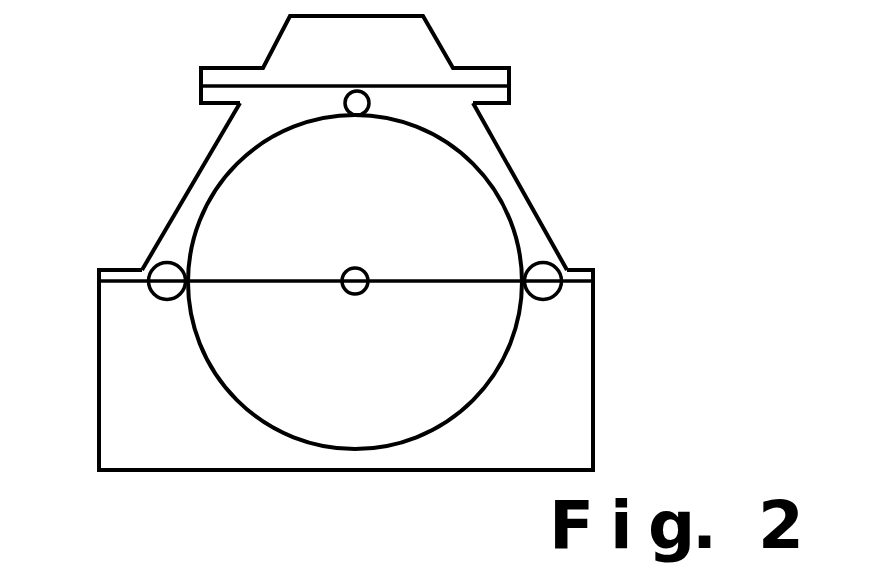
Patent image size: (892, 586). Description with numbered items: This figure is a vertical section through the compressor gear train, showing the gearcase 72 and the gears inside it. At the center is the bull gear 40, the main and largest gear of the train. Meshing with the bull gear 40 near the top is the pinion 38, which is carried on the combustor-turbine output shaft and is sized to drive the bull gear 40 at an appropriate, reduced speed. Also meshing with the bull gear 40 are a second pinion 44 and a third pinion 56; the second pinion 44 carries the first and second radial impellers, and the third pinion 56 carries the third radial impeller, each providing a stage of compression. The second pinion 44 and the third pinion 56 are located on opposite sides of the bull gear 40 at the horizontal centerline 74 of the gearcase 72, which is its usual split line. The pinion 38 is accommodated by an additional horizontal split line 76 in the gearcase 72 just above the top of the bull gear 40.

The pinion 38 is at (357, 100).
The bull gear 40 is at (490, 380).
The second pinion 44 is at (157, 297).
The third pinion 56 is at (547, 300).
The gearcase 72 is at (503, 153).
The horizontal centerline 74 is at (113, 287).
The additional horizontal split line 76 is at (233, 82).